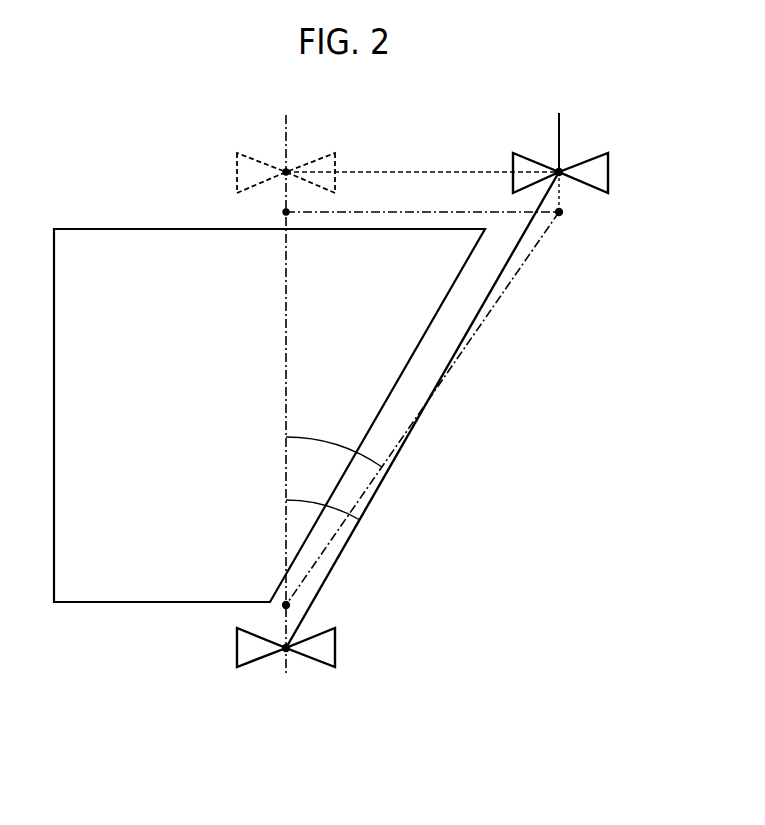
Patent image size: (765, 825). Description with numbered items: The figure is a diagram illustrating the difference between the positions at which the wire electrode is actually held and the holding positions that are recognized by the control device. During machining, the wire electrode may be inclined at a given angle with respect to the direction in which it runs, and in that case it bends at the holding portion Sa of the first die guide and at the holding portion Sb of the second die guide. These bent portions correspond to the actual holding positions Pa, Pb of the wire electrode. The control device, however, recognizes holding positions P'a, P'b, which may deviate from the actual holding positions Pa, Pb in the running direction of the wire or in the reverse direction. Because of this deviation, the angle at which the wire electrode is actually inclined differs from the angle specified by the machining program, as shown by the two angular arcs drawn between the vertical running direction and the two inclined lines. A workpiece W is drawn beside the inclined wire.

The workpiece W is at (137, 240).
The actual holding position Pa is at (557, 169).
The holding portion of the first die guide Sa is at (600, 172).
The holding position recognized by the control device P'a is at (590, 225).
The actual holding position Pb is at (288, 652).
The holding portion of the second die guide Sb is at (328, 647).
The holding position recognized by the control device P'b is at (251, 588).